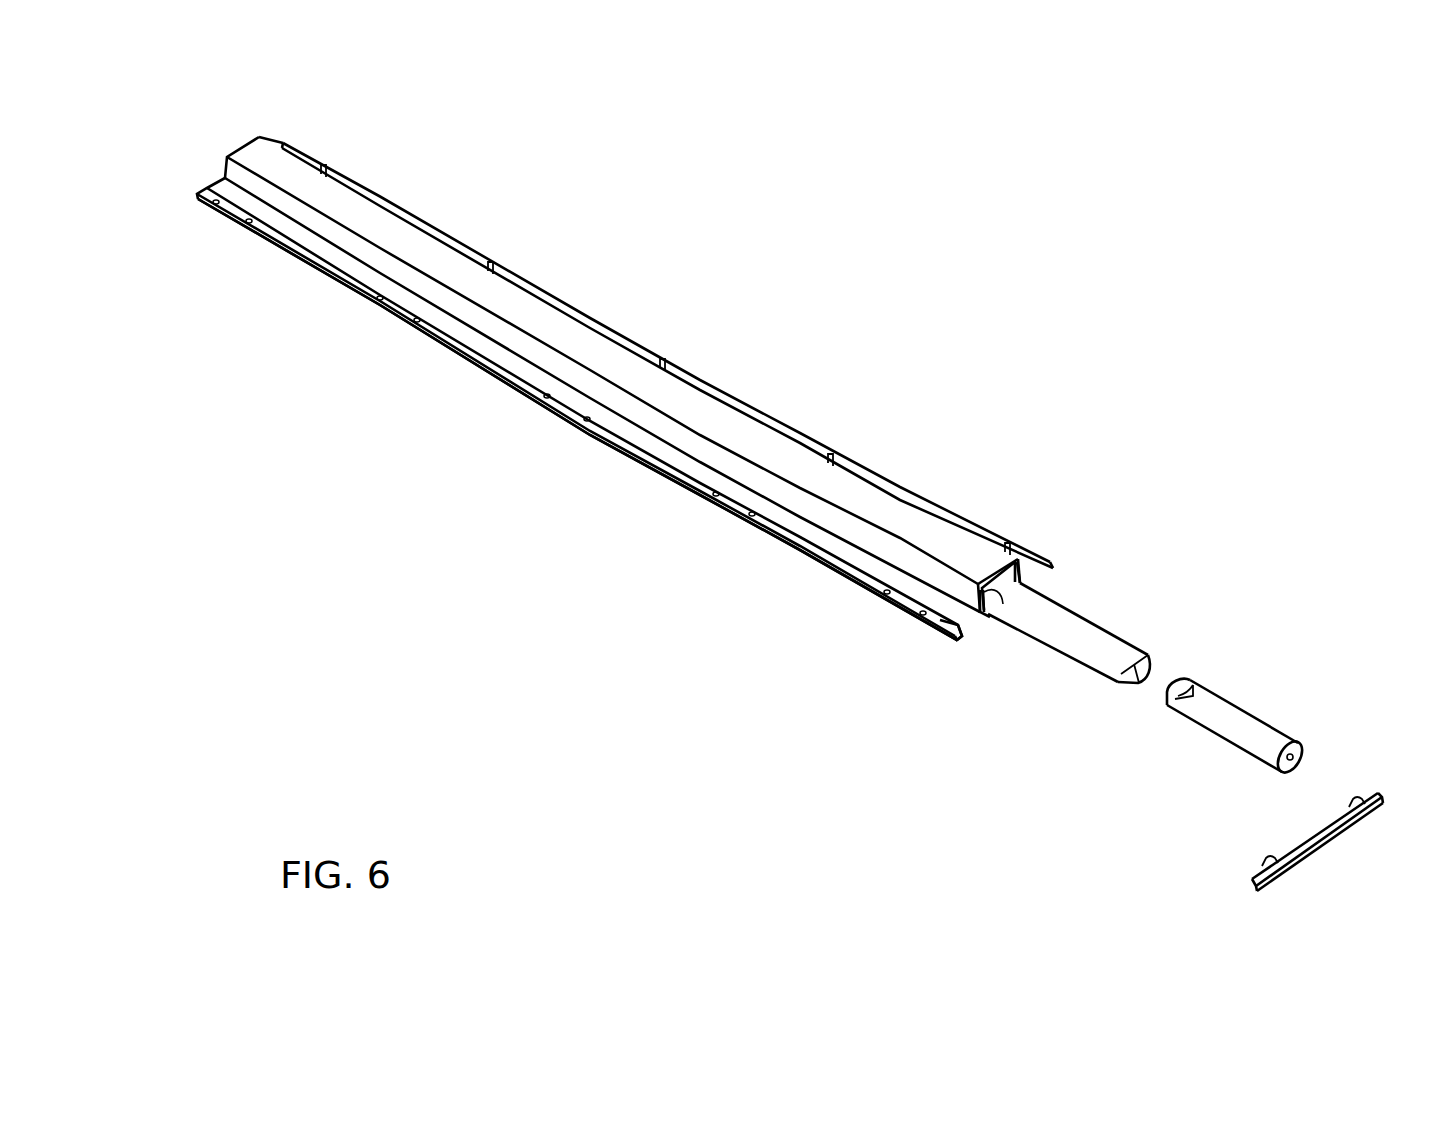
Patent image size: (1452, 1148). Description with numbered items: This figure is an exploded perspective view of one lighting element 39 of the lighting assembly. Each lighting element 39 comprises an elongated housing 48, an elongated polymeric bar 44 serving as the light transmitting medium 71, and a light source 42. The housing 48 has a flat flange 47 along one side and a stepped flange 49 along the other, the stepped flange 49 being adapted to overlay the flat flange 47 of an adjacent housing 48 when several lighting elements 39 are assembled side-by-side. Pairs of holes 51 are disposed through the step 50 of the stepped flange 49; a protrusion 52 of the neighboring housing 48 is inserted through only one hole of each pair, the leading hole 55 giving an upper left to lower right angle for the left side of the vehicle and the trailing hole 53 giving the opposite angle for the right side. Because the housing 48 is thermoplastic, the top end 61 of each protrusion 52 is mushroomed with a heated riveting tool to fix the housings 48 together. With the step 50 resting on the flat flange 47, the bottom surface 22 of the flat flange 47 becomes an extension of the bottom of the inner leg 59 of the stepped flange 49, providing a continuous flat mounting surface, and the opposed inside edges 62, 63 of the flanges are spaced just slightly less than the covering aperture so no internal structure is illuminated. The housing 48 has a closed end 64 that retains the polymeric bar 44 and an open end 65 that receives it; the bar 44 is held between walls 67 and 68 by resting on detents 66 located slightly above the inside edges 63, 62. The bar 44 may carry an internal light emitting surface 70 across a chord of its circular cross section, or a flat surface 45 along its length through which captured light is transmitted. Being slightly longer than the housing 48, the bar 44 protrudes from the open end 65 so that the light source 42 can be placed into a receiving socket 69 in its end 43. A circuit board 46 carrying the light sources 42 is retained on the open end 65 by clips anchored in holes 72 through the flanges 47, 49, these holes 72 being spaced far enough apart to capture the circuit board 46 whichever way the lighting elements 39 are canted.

The bottom surface 22 is at (1027, 590).
The lighting element 39 is at (1098, 368).
The light source 42 is at (1350, 802).
The end of polymeric bar 43 is at (1300, 749).
The elongated polymeric bar 44 is at (1097, 655).
The flat surface 45 is at (1296, 772).
The circuit board 46 is at (1325, 842).
The flat flange 47 is at (770, 425).
The housing 48 is at (385, 222).
The stepped flange 49 is at (797, 548).
The step 50 is at (655, 470).
The pairs of holes 51 is at (300, 412).
The protrusion 52 is at (1008, 545).
The trailing hole 53 is at (415, 325).
The leading hole 55 is at (378, 301).
The inner leg 59 is at (748, 492).
The top end 61 is at (661, 357).
The inside edge 62 is at (1013, 594).
The inside edge 63 is at (994, 617).
The closed end 64 is at (240, 142).
The open end 65 is at (1160, 573).
The detent 66 is at (997, 615).
The wall 67 is at (905, 550).
The wall 68 is at (890, 487).
The receiving socket 69 is at (1275, 765).
The light emitting surface 70 is at (1142, 678).
The light transmitting medium 71 is at (1218, 628).
The holes 72 is at (963, 620).